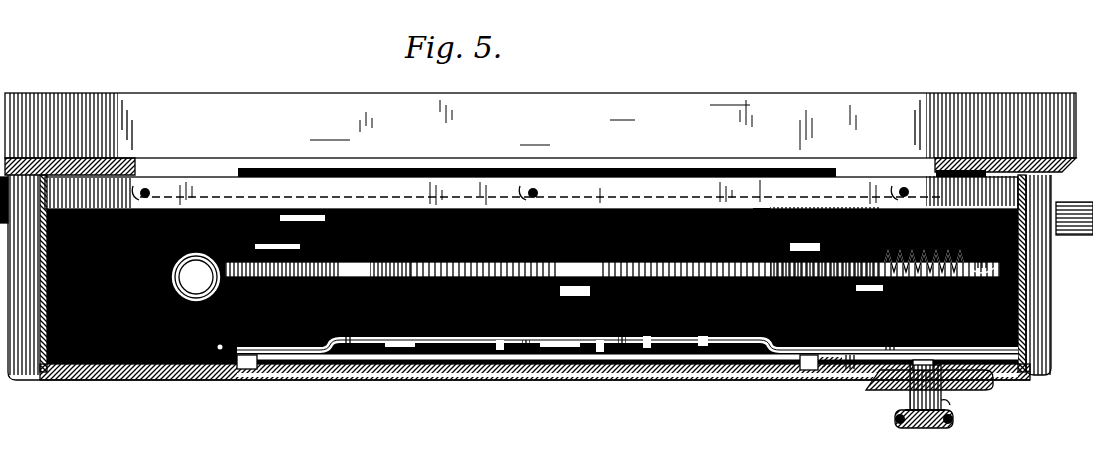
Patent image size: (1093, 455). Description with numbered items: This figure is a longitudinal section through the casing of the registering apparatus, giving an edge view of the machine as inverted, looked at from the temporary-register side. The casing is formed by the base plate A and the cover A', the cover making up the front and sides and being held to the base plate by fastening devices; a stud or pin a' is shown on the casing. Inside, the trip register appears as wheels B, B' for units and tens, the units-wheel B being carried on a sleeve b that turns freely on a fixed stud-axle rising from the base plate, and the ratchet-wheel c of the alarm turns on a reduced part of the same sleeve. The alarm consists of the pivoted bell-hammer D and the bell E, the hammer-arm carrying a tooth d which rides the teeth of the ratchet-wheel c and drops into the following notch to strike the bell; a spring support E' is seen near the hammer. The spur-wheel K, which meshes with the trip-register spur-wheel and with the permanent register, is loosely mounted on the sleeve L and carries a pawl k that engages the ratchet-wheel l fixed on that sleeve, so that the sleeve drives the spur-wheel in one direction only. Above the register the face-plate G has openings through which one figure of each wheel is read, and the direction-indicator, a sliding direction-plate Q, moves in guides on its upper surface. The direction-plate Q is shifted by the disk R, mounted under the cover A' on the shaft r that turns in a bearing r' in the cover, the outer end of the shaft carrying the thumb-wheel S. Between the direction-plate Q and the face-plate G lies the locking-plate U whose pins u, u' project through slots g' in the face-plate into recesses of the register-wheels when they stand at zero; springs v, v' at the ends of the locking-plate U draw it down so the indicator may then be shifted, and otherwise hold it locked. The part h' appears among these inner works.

The base plate A is at (540, 134).
The cover A' is at (546, 293).
The casing lug a' is at (14, 238).
The lever support post E' is at (268, 218).
The bell E is at (201, 294).
The bell-hammer D is at (196, 277).
The ratchet-wheel c is at (612, 268).
The plate arm c' is at (721, 231).
The rack bar h' is at (712, 278).
The slots g' is at (660, 344).
The tooth d is at (882, 253).
The spur-wheel K is at (878, 287).
The pawl k is at (862, 297).
The ratchet-wheel l is at (850, 305).
The units-wheel B is at (627, 374).
The tens-wheel B' is at (560, 375).
The spring v' is at (234, 374).
The pin u' is at (493, 374).
The sliding direction-plate Q is at (527, 352).
The locking-plate U is at (600, 352).
The face-plate G is at (622, 345).
The pin u is at (655, 368).
The sleeve b is at (703, 342).
The sleeve L is at (820, 368).
The spring v is at (831, 380).
The disk R is at (913, 368).
The thumb-wheel S is at (926, 428).
The shaft r is at (920, 432).
The bearing r' is at (956, 413).